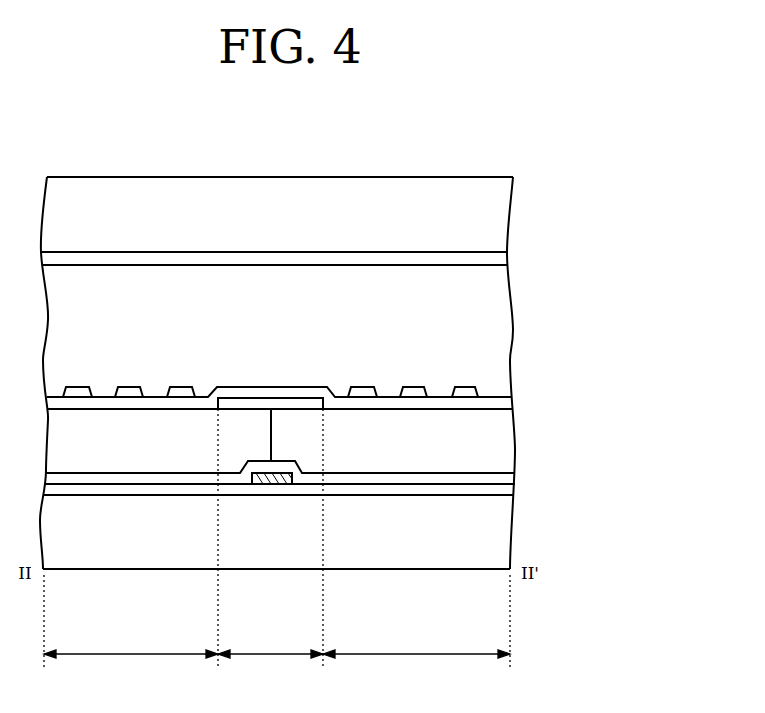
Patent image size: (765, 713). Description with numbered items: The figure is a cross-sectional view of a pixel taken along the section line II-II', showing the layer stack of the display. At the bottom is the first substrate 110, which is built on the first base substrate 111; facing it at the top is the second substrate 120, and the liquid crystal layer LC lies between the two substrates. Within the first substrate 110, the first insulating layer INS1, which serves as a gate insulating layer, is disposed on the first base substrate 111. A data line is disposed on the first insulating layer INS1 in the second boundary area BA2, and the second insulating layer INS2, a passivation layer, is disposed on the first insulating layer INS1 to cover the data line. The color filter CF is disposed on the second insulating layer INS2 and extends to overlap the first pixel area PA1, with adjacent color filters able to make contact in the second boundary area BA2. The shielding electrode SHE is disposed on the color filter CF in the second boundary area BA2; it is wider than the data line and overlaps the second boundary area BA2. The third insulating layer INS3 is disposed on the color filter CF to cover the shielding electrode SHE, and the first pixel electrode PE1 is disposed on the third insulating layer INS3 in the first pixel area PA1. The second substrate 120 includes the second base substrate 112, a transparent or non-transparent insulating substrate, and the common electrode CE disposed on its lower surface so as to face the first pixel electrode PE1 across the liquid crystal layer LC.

The second base substrate 112 is at (493, 210).
The common electrode CE is at (497, 257).
The second substrate 120 is at (593, 198).
The liquid crystal layer LC is at (493, 323).
The first pixel electrode PE1 is at (468, 392).
The shielding electrode SHE is at (297, 404).
The third insulating layer INS3 is at (497, 403).
The color filter CF is at (500, 444).
The second insulating layer INS2 is at (497, 478).
The first insulating layer INS1 is at (510, 490).
The first base substrate 111 is at (493, 538).
The first substrate 110 is at (600, 365).
The first pixel area PA1 is at (277, 667).
The second boundary area BA2 is at (270, 667).